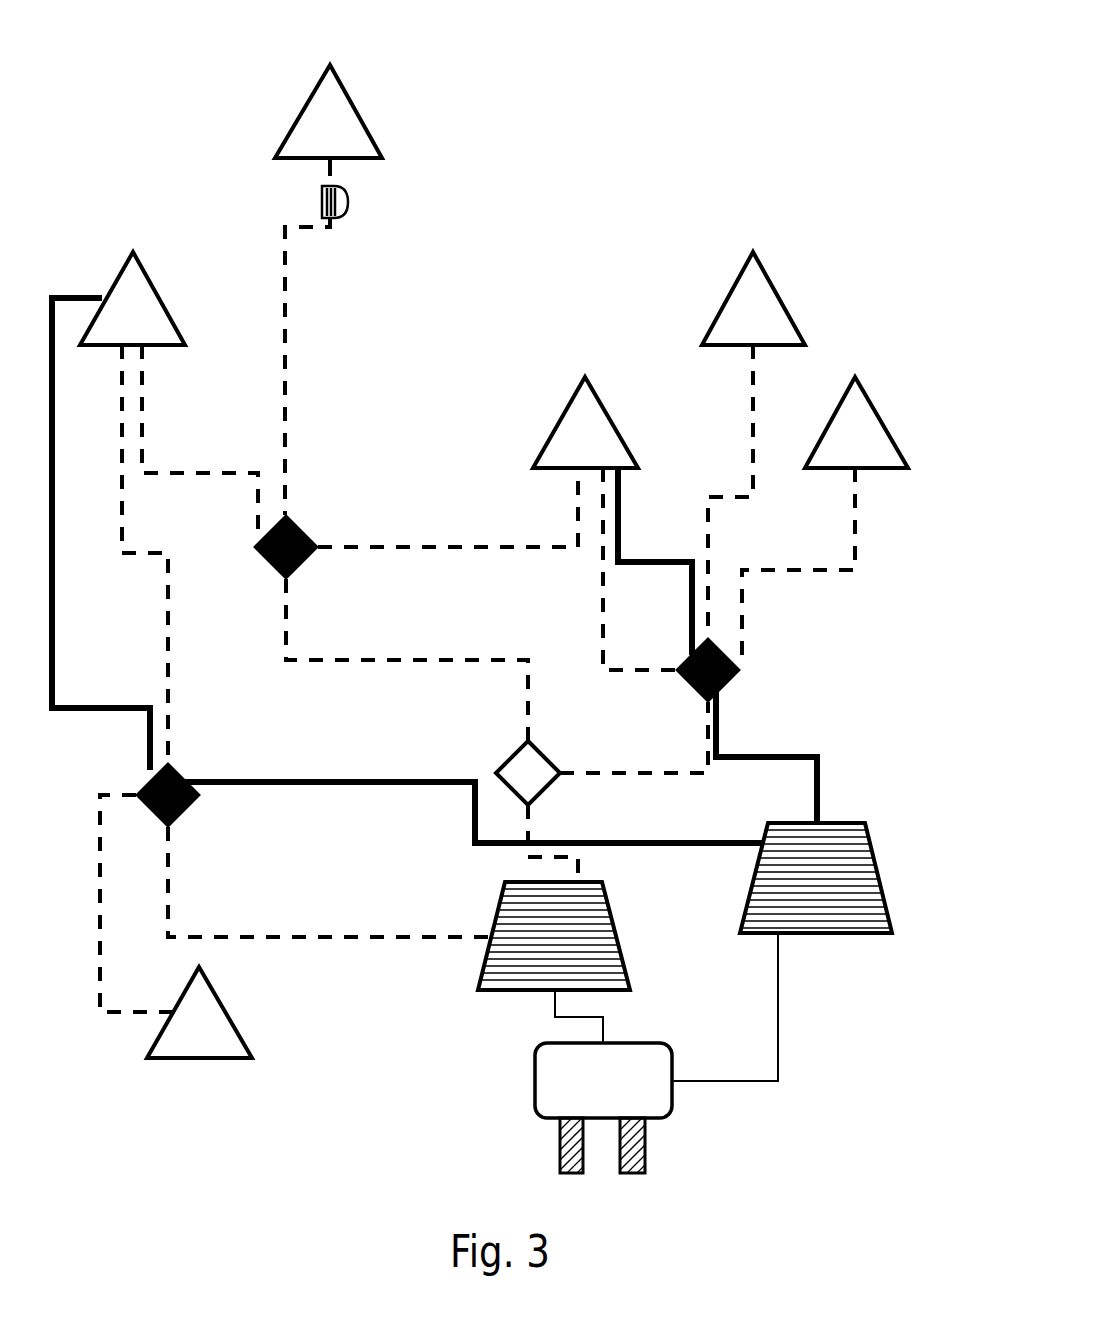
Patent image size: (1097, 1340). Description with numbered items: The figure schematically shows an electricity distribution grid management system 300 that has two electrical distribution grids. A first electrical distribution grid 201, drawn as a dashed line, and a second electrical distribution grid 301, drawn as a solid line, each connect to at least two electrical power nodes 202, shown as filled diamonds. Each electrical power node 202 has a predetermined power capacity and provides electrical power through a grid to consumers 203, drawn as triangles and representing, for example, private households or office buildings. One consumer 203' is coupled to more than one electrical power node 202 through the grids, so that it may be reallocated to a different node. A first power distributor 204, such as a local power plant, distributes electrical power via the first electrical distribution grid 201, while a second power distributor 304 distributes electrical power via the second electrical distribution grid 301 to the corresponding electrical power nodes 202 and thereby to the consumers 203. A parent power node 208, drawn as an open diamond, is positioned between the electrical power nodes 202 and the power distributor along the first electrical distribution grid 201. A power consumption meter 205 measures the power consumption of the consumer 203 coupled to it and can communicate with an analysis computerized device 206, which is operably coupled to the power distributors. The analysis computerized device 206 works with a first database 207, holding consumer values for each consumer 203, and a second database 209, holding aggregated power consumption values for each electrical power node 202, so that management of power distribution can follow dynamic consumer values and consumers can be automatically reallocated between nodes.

The electricity distribution grid management system 300 is at (748, 104).
The first electrical distribution grid 201 is at (288, 357).
The electrical power node 202 is at (300, 562).
The consumer 203 is at (542, 544).
The consumer 203' is at (148, 263).
The first power distributor 204 is at (608, 930).
The power consumption meter 205 is at (350, 203).
The analysis computerized device 206 is at (535, 1080).
The first database 207 is at (648, 1145).
The parent power node 208 is at (497, 770).
The second database 209 is at (560, 1148).
The second electrical distribution grid 301 is at (262, 779).
The second power distributor 304 is at (800, 935).